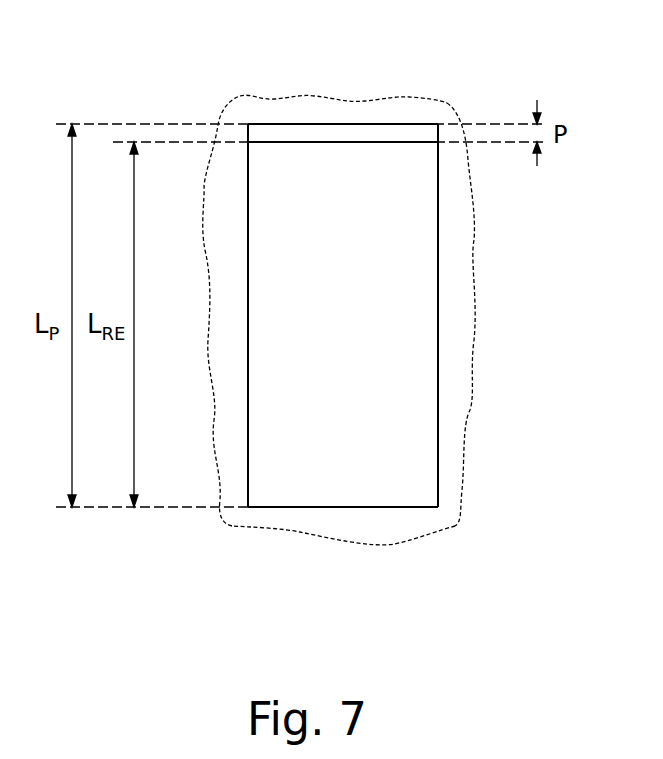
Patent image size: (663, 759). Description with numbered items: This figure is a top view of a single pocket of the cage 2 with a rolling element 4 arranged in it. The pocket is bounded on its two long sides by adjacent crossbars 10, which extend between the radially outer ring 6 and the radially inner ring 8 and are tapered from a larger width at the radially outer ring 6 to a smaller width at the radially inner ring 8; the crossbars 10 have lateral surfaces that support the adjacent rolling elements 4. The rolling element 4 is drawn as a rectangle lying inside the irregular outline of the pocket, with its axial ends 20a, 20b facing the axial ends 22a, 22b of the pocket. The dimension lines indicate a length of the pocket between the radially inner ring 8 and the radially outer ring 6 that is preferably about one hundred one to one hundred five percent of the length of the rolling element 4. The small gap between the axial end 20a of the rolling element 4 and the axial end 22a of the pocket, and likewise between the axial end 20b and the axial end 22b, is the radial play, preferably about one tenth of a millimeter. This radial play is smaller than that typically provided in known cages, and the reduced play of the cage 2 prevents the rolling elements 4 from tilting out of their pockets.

The cage 2 is at (421, 108).
The rolling element 4 is at (418, 447).
The radially outer ring 6 is at (256, 108).
The radially inner ring 8 is at (387, 530).
The crossbar 10 is at (462, 365).
The axial end of rolling element 20a is at (290, 143).
The axial end of rolling element 20b is at (283, 508).
The axial end of pocket 22a is at (367, 125).
The axial end of pocket 22b is at (340, 508).